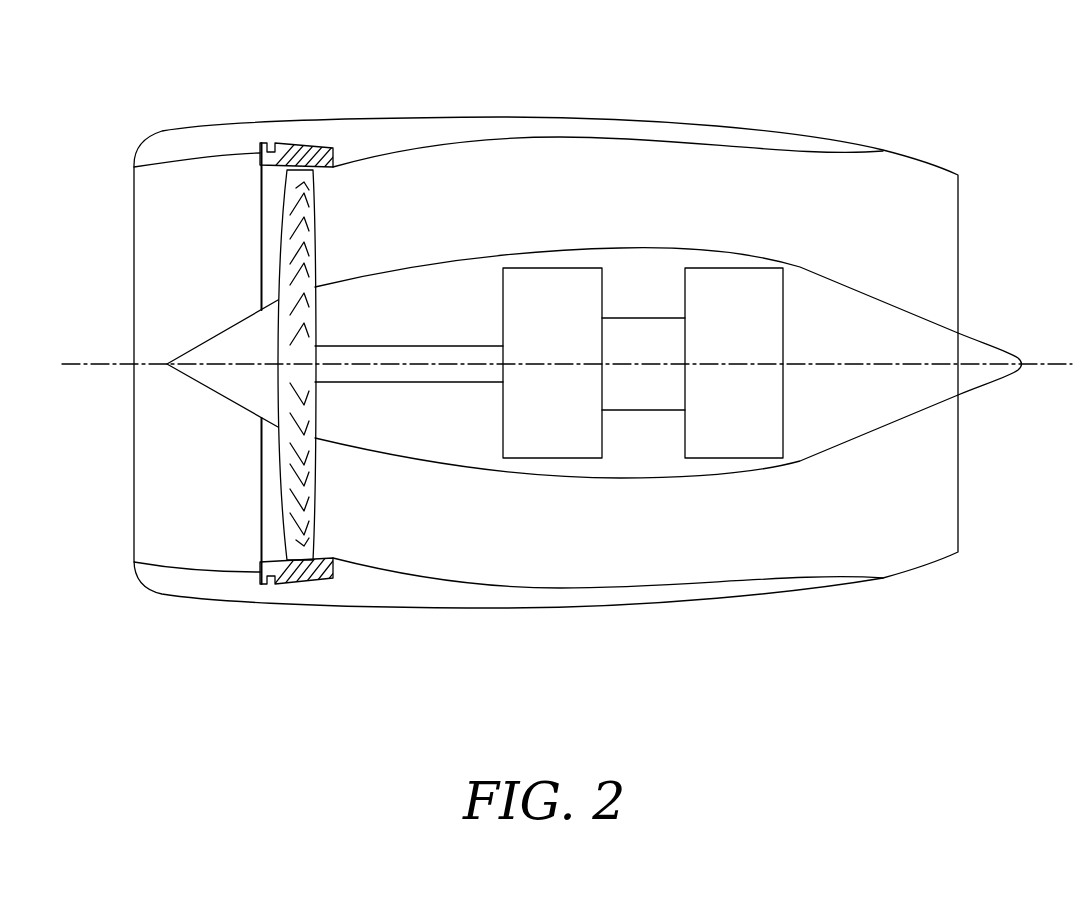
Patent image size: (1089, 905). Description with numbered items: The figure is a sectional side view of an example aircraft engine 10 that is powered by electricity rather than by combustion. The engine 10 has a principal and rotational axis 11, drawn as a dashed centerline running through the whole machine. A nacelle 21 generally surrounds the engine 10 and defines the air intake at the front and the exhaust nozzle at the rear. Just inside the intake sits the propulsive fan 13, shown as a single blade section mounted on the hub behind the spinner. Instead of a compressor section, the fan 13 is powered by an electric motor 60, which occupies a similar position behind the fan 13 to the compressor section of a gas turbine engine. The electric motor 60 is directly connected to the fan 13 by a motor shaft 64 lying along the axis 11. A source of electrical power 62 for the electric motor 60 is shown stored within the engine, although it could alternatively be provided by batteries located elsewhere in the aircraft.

The engine 10 is at (739, 619).
The principal and rotational axis 11 is at (1055, 364).
The propulsive fan 13 is at (317, 500).
The nacelle 21 is at (685, 120).
The electric motor 60 is at (602, 420).
The source of electrical power 62 is at (783, 298).
The motor shaft 64 is at (425, 346).